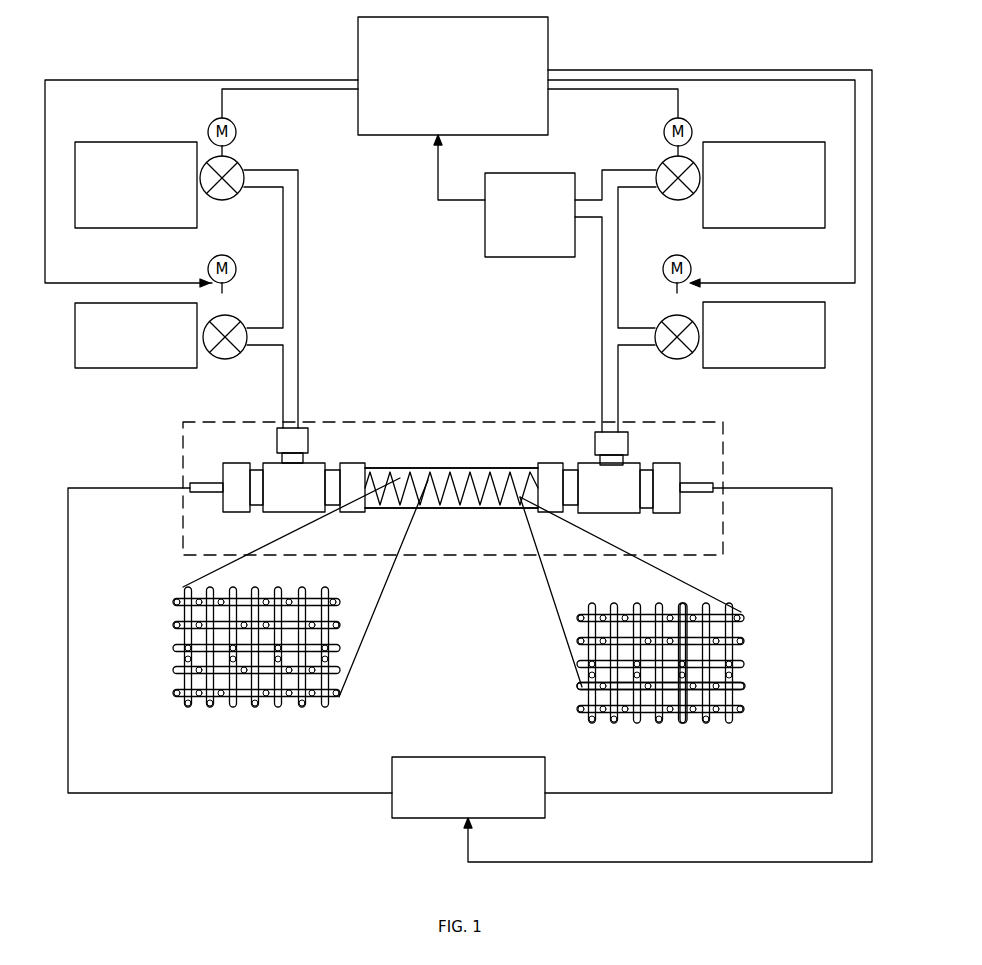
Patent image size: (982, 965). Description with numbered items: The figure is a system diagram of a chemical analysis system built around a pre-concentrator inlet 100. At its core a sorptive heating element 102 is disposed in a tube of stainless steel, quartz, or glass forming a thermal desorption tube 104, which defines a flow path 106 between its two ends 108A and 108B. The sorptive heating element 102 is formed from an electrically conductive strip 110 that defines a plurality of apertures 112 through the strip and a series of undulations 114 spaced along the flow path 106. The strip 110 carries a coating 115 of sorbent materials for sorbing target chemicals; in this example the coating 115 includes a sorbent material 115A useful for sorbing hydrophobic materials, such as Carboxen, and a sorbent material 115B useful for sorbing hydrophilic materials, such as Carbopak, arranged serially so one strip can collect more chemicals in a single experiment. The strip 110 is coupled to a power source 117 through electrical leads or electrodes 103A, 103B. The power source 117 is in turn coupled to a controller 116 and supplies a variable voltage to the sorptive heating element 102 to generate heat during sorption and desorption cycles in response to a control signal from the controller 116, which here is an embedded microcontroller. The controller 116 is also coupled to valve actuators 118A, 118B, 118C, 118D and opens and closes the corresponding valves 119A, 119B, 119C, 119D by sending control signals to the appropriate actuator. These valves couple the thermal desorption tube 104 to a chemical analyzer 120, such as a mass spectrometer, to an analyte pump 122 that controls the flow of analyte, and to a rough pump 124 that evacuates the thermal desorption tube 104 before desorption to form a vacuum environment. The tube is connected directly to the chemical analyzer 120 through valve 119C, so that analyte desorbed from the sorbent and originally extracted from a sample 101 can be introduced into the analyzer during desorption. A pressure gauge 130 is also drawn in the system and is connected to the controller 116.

The pre-concentrator inlet 100 is at (430, 421).
The sample 101 is at (764, 335).
The sorptive heating element 102 is at (386, 481).
The electrical lead/electrode 103A is at (190, 487).
The electrical lead/electrode 103B is at (716, 487).
The thermal desorption tube 104 is at (410, 511).
The flow path 106 is at (472, 477).
The end 108A is at (327, 511).
The end 108B is at (541, 480).
The electrically conductive strip 110 is at (410, 477).
The apertures 112 is at (675, 697).
The undulations 114 is at (500, 510).
The coating 115 is at (745, 640).
The sorbent material 115A is at (173, 625).
The sorbent material 115B is at (637, 720).
The controller 116 is at (453, 76).
The power source 117 is at (468, 787).
The valve actuator 118A is at (239, 125).
The valve actuator 118B is at (211, 272).
The valve actuator 118C is at (666, 135).
The valve actuator 118D is at (686, 272).
The valve 119A is at (206, 160).
The valve 119B is at (218, 361).
The valve 119C is at (694, 160).
The valve 119D is at (678, 361).
The chemical analyzer 120 is at (764, 185).
The analyte pump 122 is at (136, 185).
The rough pump 124 is at (136, 335).
The pressure gauge 130 is at (530, 215).